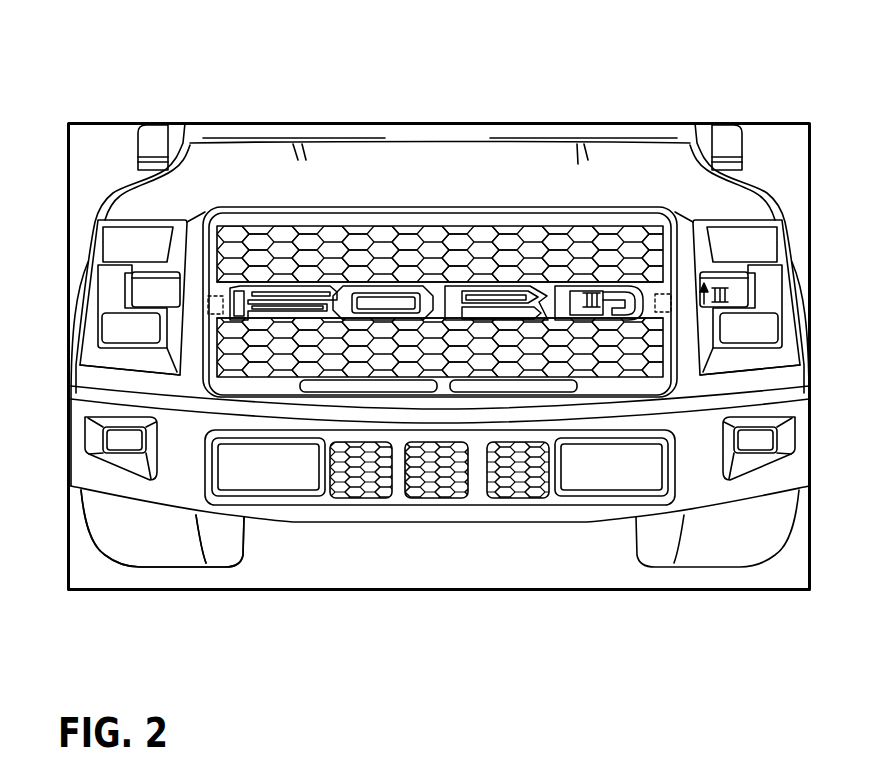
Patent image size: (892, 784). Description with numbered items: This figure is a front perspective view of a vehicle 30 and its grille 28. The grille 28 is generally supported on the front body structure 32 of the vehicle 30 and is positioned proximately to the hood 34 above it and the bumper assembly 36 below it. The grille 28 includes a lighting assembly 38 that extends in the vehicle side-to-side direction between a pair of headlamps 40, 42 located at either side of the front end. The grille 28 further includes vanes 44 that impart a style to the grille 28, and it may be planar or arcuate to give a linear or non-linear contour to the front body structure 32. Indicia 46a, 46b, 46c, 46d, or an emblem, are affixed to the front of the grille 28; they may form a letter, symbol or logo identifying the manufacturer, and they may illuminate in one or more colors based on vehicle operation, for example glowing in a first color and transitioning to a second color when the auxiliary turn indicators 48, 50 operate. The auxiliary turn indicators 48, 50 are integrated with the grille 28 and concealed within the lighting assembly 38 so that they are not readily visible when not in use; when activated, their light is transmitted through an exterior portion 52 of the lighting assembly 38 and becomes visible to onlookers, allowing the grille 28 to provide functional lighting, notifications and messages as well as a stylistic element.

The grille 28 is at (638, 200).
The vehicle 30 is at (116, 160).
The front body structure 32 is at (767, 402).
The hood 34 is at (200, 168).
The bumper assembly 36 is at (178, 472).
The lighting assembly 38 is at (706, 283).
The headlamp 40 is at (110, 290).
The headlamp 42 is at (764, 298).
The vanes 44 is at (390, 348).
The indicia 46a is at (240, 288).
The indicia 46b is at (372, 288).
The indicia 46c is at (483, 288).
The indicia 46d is at (567, 288).
The auxiliary turn indicator 48 is at (208, 304).
The auxiliary turn indicator 50 is at (673, 306).
The exterior portion 52 is at (665, 285).